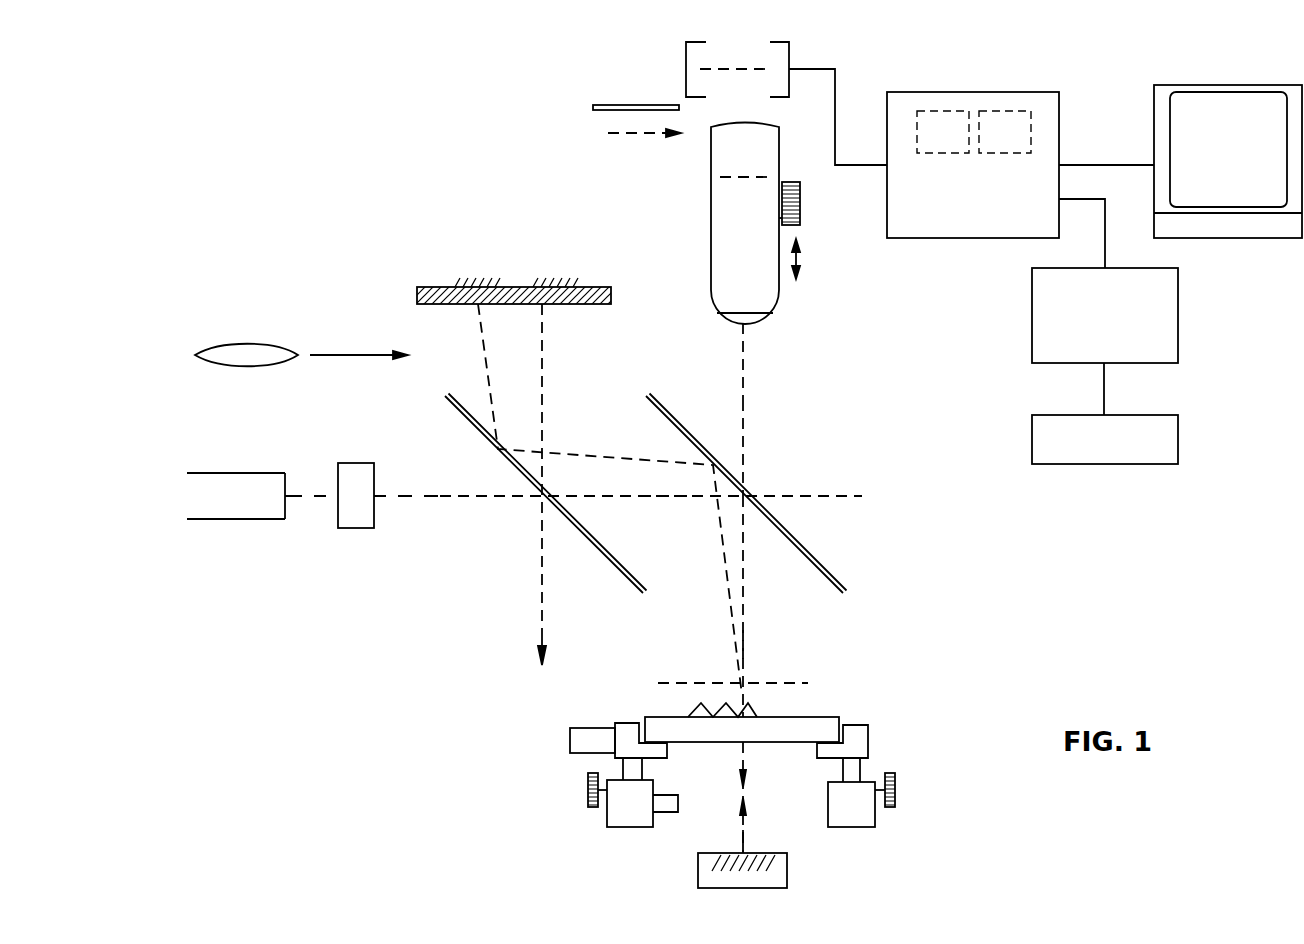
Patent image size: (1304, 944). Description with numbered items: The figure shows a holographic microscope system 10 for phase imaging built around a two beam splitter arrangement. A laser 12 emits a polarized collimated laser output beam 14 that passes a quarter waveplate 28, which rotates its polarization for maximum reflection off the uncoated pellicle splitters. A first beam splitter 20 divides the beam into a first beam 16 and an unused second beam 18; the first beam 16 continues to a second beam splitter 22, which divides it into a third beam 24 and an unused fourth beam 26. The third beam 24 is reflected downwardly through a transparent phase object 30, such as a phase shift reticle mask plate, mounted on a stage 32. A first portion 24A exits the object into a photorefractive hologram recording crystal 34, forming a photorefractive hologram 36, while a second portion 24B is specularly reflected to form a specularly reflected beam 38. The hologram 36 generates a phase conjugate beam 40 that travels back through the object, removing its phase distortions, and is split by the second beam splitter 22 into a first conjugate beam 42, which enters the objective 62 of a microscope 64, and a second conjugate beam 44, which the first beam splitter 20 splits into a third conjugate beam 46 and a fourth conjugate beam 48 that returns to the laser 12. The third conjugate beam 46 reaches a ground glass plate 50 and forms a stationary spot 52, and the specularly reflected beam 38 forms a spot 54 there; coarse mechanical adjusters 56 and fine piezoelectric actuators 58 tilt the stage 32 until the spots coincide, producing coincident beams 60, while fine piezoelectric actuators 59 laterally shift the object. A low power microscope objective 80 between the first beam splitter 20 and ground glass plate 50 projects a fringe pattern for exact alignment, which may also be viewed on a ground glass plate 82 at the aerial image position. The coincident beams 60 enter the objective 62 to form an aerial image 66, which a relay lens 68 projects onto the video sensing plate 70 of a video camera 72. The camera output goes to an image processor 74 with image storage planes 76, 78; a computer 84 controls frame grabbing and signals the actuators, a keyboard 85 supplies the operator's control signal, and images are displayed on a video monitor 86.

The holographic microscope system 10 is at (446, 137).
The laser 12 is at (212, 519).
The laser output beam 14 is at (300, 492).
The first beam 16 is at (392, 492).
The second beam 18 is at (502, 618).
The first beam splitter 20 is at (613, 572).
The second beam splitter 22 is at (787, 533).
The third beam 24 is at (745, 613).
The first portion of third beam 24A is at (745, 752).
The second portion of third beam 24B is at (732, 635).
The fourth beam 26 is at (823, 495).
The quarter waveplate 28 is at (352, 528).
The transparent phase object 30 is at (820, 712).
The stage 32 is at (857, 725).
The photorefractive hologram recording crystal 34 is at (697, 878).
The photorefractive hologram 36 is at (772, 863).
The specularly reflected beam 38 is at (727, 587).
The phase conjugate beam 40 is at (745, 837).
The first conjugate beam 42 is at (748, 435).
The second conjugate beam 44 is at (668, 497).
The third conjugate beam 46 is at (543, 345).
The fourth conjugate beam 48 is at (452, 502).
The ground glass plate 50 is at (417, 296).
The stationary spot 52 is at (550, 278).
The spot 54 is at (463, 278).
The coarse mechanical adjusters 56 is at (898, 795).
The fine piezoelectric actuators 58 is at (862, 772).
The fine piezoelectric actuators 59 is at (568, 737).
The coincident beams 60 is at (748, 383).
The objective 62 is at (748, 323).
The microscope 64 is at (779, 163).
The aerial image 66 is at (743, 178).
The relay lens 68 is at (752, 125).
The video sensing plate 70 is at (723, 65).
The video camera 72 is at (793, 57).
The image processor 74 is at (973, 92).
The image storage plane 76 is at (943, 132).
The image storage plane 78 is at (1005, 132).
The low power microscope objective 80 is at (213, 363).
The ground glass plate 82 is at (623, 127).
The computer 84 is at (1030, 320).
The keyboard 85 is at (1178, 442).
The video monitor 86 is at (1195, 85).